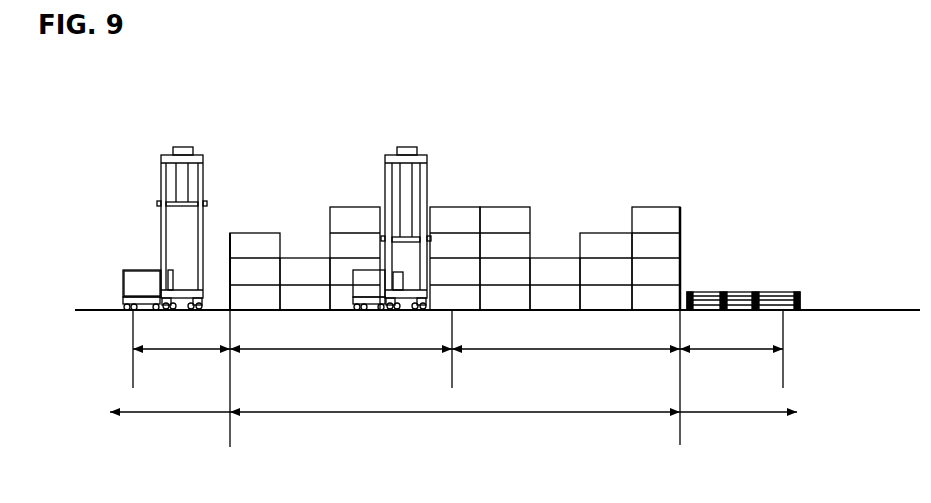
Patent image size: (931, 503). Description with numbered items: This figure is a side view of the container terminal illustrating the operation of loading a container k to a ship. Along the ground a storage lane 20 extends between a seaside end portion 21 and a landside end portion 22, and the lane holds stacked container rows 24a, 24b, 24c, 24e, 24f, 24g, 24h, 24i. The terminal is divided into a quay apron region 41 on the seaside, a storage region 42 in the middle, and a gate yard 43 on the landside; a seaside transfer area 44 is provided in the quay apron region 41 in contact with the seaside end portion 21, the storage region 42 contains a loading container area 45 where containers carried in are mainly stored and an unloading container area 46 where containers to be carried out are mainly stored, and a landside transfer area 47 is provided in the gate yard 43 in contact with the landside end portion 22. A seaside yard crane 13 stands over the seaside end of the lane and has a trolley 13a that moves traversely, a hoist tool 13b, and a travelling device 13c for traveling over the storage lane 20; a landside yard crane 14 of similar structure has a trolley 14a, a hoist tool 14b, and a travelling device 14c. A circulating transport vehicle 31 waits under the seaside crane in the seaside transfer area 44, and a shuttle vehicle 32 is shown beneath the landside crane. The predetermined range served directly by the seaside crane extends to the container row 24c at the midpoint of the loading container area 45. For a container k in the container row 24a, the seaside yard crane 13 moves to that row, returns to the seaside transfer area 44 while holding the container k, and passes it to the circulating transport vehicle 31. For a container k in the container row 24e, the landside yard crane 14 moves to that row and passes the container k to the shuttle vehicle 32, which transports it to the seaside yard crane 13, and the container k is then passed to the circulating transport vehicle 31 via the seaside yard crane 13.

The seaside yard crane 13 is at (195, 128).
The trolley 13a is at (180, 147).
The hoist tool 13b is at (159, 203).
The travelling device 13c is at (178, 302).
The landside yard crane 14 is at (387, 138).
The trolley 14a is at (408, 147).
The hoist tool 14b is at (430, 218).
The travelling device 14c is at (397, 302).
The storage lane 20 is at (575, 128).
The seaside end portion 21 is at (228, 250).
The landside end portion 22 is at (683, 210).
The container row 24a is at (259, 237).
The container row 24b is at (298, 280).
The container row 24c is at (343, 222).
The container row 24e is at (455, 226).
The container row 24f is at (519, 222).
The container row 24g is at (549, 272).
The container row 24h is at (597, 248).
The container row 24i is at (655, 222).
The circulating transport vehicle 31 is at (122, 281).
The shuttle vehicle 32 is at (360, 301).
The container k is at (134, 280).
The quay apron region 41 is at (143, 414).
The storage region 42 is at (435, 414).
The gate yard 43 is at (740, 412).
The seaside transfer area 44 is at (168, 352).
The loading container area 45 is at (350, 352).
The unloading container area 46 is at (545, 352).
The landside transfer area 47 is at (718, 352).